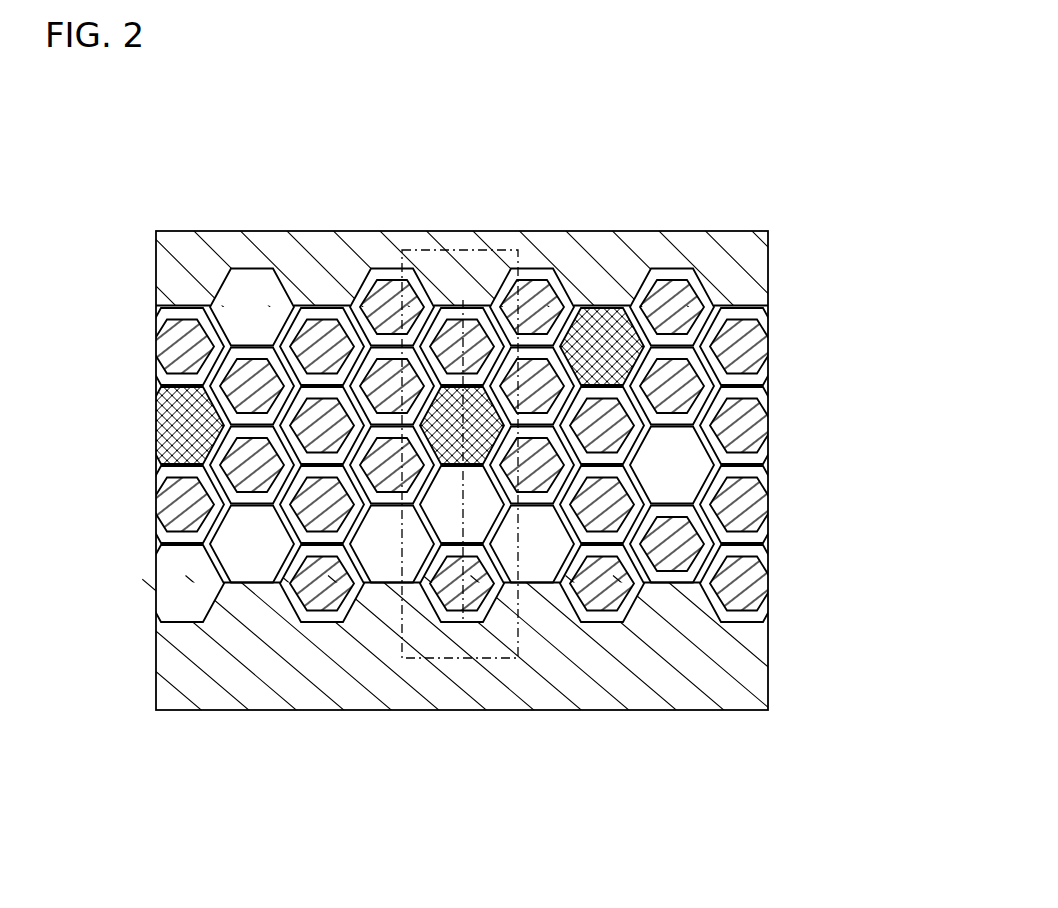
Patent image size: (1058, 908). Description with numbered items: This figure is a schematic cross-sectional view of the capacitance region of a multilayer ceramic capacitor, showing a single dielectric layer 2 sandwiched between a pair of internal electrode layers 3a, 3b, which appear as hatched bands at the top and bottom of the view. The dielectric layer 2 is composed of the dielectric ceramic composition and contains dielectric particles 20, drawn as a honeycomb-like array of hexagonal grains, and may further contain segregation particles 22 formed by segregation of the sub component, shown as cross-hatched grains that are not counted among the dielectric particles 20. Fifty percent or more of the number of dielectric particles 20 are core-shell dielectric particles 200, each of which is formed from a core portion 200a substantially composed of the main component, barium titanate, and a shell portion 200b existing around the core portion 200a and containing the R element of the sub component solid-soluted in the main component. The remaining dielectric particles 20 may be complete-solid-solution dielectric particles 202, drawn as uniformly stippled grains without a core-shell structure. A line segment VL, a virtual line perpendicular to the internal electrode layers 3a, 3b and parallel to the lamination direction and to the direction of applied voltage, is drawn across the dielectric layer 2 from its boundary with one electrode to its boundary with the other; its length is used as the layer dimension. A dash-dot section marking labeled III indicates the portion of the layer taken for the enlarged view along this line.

The dielectric layer 2 is at (212, 373).
The internal electrode layer 3a is at (188, 265).
The internal electrode layer 3b is at (183, 672).
The dielectric particles 20 is at (673, 478).
The segregation particles 22 is at (590, 333).
The core-shell dielectric particles 200 is at (545, 478).
The core portion 200a is at (690, 392).
The shell portion 200b is at (703, 320).
The complete-solid-solution dielectric particles 202 is at (693, 472).
The line segment VL is at (450, 617).
The section line III- III is at (427, 250).